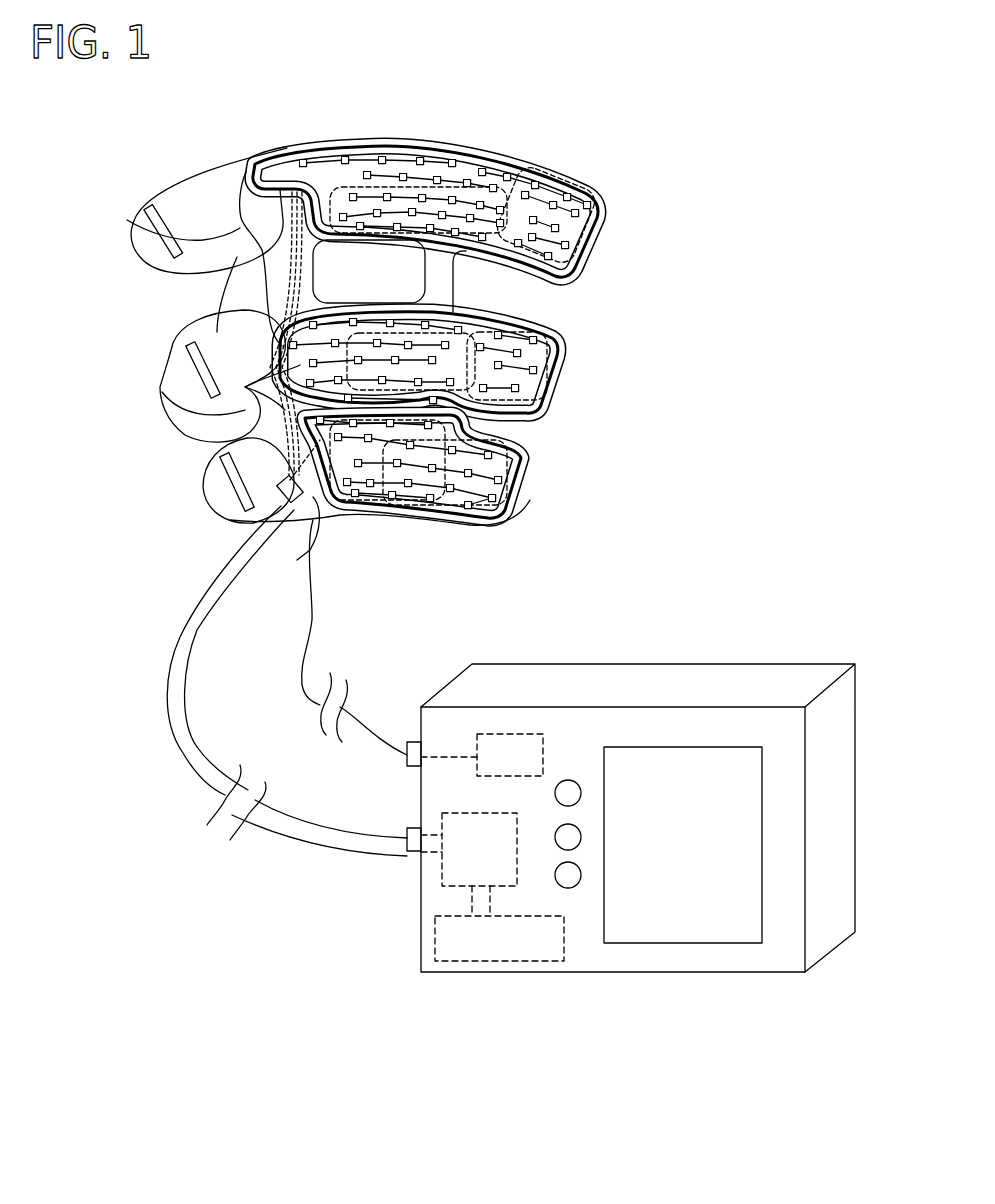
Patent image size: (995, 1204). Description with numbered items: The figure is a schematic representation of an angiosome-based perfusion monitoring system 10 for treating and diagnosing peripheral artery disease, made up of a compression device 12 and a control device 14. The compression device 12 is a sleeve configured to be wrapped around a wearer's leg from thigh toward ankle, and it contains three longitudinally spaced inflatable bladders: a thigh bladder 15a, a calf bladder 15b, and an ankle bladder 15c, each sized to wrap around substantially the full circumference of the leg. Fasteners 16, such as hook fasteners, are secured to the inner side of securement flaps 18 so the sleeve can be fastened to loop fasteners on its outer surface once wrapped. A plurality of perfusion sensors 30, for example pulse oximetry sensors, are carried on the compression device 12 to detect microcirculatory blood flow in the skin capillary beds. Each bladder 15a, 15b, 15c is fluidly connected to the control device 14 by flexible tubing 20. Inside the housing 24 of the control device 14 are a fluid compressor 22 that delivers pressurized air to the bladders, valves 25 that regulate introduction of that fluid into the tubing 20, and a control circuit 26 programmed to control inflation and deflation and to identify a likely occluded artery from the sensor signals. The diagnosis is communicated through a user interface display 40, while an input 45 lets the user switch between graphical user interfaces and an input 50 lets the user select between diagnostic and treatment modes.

The angiosome-based perfusion monitoring system 10 is at (738, 149).
The compression device 12 is at (381, 336).
The control device 14 is at (596, 801).
The thigh bladder 15a is at (333, 160).
The calf bladder 15b is at (275, 308).
The ankle bladder 15c is at (514, 451).
The fasteners 16 is at (137, 224).
The securement flaps 18 is at (152, 257).
The flexible tubing 20 is at (165, 684).
The fluid compressor 22 is at (463, 962).
The housing 24 is at (550, 672).
The valves 25 is at (442, 873).
The control circuit 26 is at (498, 733).
The perfusion sensors 30 is at (452, 158).
The user interface display 40 is at (683, 943).
The input 45 is at (568, 780).
The input 50 is at (573, 887).